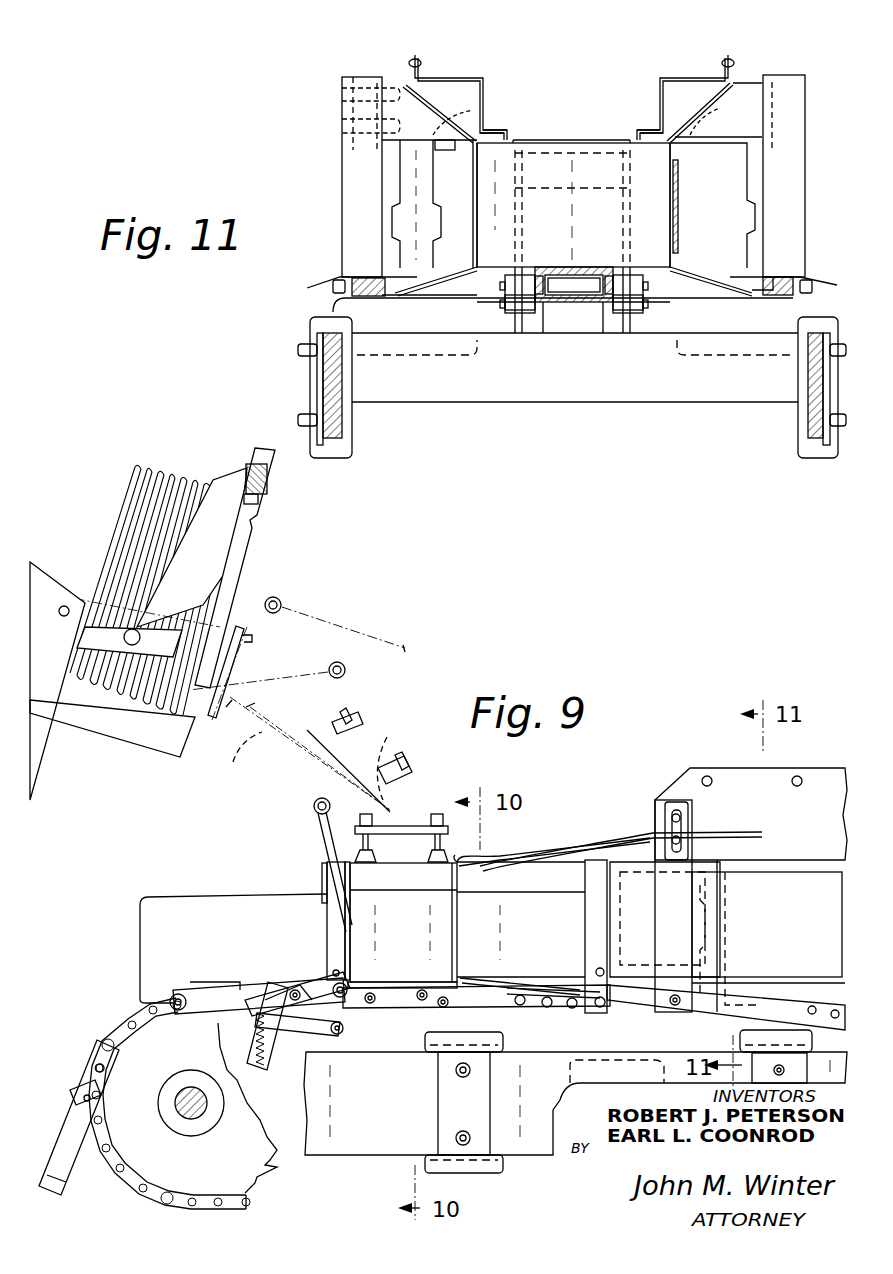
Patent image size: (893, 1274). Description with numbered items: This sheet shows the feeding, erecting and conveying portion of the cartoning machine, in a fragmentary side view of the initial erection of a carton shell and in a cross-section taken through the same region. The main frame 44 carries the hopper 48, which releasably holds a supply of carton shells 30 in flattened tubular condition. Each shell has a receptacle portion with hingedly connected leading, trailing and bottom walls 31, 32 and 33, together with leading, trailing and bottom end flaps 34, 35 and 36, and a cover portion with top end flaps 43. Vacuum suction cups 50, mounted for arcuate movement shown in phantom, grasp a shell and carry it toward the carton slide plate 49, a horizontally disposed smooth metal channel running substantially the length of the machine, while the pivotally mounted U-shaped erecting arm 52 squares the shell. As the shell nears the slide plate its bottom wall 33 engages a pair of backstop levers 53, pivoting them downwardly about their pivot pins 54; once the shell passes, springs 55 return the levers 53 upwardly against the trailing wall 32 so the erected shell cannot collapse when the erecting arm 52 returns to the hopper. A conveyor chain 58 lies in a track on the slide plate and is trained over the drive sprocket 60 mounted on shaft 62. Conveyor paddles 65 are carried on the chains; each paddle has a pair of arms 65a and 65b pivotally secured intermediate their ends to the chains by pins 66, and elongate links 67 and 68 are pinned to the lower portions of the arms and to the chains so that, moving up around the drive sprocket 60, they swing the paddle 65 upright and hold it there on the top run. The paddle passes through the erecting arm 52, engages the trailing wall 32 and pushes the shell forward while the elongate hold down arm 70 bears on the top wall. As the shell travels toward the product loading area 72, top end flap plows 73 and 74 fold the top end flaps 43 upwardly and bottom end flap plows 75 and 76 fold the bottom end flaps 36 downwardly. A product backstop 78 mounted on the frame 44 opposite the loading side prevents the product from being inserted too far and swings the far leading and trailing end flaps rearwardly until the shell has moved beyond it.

In FIG. 9, the carton shell 30 is at (256, 742).
In FIG. 11, the leading wall 31 is at (577, 231).
In FIG. 9, the trailing wall 32 is at (352, 944).
In FIG. 9, the bottom wall 33 is at (408, 986).
In FIG. 11, the leading end flap 34 is at (466, 188).
In FIG. 11, the trailing end flap 35 is at (427, 183).
In FIG. 11, the bottom end flap 36 is at (430, 278).
In FIG. 11, the top end flap 43 is at (462, 128).
In FIG. 11, the main frame 44 is at (573, 400).
In FIG. 9, the main frame 44 is at (338, 1158).
In FIG. 9, the hopper 48 is at (126, 742).
In FIG. 11, the carton slide plate 49 is at (568, 268).
In FIG. 9, the carton slide plate 49 is at (533, 985).
In FIG. 9, the vacuum suction cups 50 is at (380, 775).
In FIG. 9, the U-shaped erecting arm 52 is at (327, 628).
In FIG. 9, the backstop levers 53 is at (315, 985).
In FIG. 9, the pivot pins 54 is at (294, 990).
In FIG. 9, the springs 55 is at (268, 1046).
In FIG. 11, the conveyor chain 58 is at (548, 296).
In FIG. 9, the conveyor chain 58 is at (592, 990).
In FIG. 9, the drive sprocket 60 is at (187, 1051).
In FIG. 9, the shaft 62 is at (193, 1115).
In FIG. 11, the conveyor paddle 65 is at (586, 138).
In FIG. 9, the conveyor paddle 65 is at (316, 876).
In FIG. 11, the paddle arm 65a is at (518, 320).
In FIG. 11, the paddle arm 65b is at (627, 320).
In FIG. 9, the pins 66 is at (97, 1066).
In FIG. 11, the elongate link 67 is at (510, 318).
In FIG. 9, the elongate link 67 is at (203, 1000).
In FIG. 11, the elongate link 68 is at (632, 318).
In FIG. 9, the hold down arm 70 is at (505, 858).
In FIG. 11, the product loading area 72 is at (338, 196).
In FIG. 11, the top end flap plow 73 is at (432, 107).
In FIG. 9, the top end flap plow 73 is at (603, 848).
In FIG. 11, the top end flap plow 74 is at (706, 107).
In FIG. 9, the bottom end flap plow 75 is at (470, 980).
In FIG. 11, the bottom end flap plow 76 is at (430, 290).
In FIG. 11, the product backstop 78 is at (680, 208).
In FIG. 9, the product backstop 78 is at (784, 938).